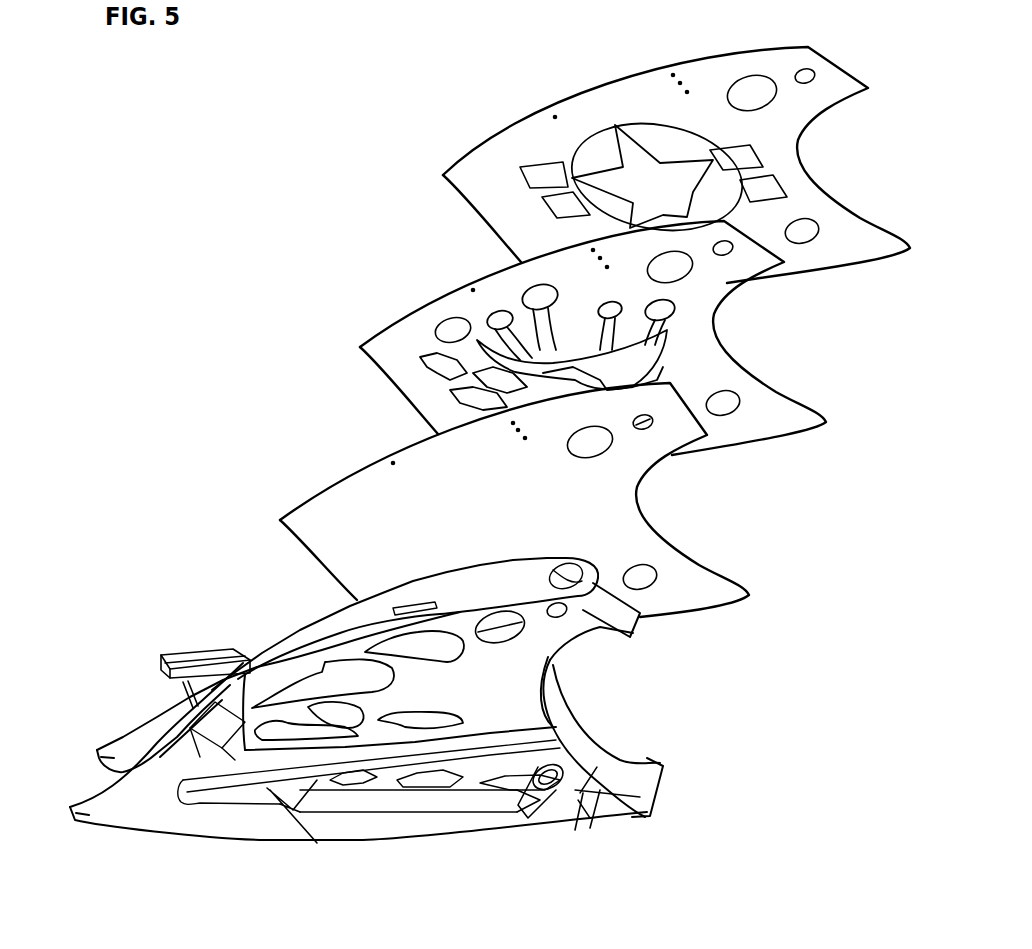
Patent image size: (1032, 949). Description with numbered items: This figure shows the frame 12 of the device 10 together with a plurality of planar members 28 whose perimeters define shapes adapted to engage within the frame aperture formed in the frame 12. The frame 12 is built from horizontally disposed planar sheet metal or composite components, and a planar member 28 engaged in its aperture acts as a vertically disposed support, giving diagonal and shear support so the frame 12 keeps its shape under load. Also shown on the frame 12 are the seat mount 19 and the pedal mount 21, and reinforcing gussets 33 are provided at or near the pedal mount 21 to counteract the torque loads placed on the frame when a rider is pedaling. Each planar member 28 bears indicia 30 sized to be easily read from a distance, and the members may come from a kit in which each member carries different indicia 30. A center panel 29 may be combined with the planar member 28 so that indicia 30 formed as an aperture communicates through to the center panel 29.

The visor assembly 10 is at (243, 228).
The frame 12 is at (660, 772).
The seat mount 19 is at (167, 655).
The pedal mount 21 is at (542, 787).
The planar member 28 is at (568, 387).
The center panel 29 is at (618, 527).
The indicia 30 is at (593, 128).
The reinforcing gussets 33 is at (385, 828).